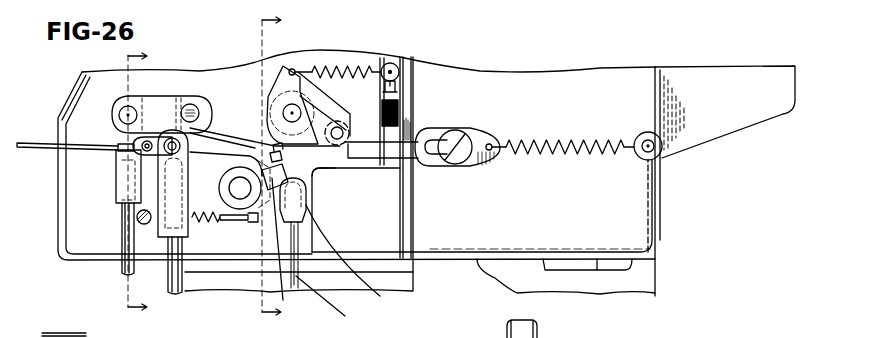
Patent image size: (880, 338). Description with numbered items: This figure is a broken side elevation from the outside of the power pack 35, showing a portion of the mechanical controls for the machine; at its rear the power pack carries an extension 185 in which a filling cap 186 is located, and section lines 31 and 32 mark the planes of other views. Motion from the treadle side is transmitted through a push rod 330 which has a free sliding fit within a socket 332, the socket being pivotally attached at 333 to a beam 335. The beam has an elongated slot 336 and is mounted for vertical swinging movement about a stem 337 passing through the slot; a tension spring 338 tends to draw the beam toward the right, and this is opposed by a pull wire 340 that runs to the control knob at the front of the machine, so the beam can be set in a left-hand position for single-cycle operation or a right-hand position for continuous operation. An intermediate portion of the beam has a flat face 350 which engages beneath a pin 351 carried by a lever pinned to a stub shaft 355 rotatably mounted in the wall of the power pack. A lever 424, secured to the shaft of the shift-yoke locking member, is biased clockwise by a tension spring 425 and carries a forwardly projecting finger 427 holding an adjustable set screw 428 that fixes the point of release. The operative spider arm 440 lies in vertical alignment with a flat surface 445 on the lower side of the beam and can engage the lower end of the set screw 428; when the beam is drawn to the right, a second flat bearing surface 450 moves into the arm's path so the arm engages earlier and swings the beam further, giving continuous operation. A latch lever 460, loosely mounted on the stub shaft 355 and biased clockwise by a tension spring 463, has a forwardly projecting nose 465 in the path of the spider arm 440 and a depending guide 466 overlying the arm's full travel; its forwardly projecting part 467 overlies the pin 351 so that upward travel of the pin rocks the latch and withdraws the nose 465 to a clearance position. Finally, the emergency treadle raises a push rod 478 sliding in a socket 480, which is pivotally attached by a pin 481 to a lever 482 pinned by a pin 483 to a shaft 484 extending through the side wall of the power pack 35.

The section line 31 is at (257, 172).
The section line 32 is at (123, 185).
The power pack 35 is at (665, 209).
The extension 185 is at (738, 128).
The filling cap 186 is at (375, 329).
The push rod 330 is at (177, 293).
The socket 332 is at (218, 226).
The pivotal attachment 333 is at (166, 150).
The beam 335 is at (405, 147).
The elongated slot 336 is at (437, 140).
The stem 337 is at (470, 130).
The tension spring 338 is at (587, 139).
The pull wire 340 is at (42, 153).
The flat face 350 is at (381, 167).
The pin 351 is at (342, 132).
The stub shaft 355 is at (287, 108).
The lever 424 is at (256, 222).
The tension spring 425 is at (155, 227).
The finger 427 is at (328, 180).
The set screw 428 is at (275, 162).
The spider arm 440 is at (308, 212).
The flat surface 445 is at (310, 192).
The second flat bearing surface 450 is at (283, 300).
The lever 460 is at (276, 90).
The tension spring 463 is at (364, 68).
The nose 465 is at (359, 259).
The depending guide 466 is at (335, 305).
The forwardly projecting part 467 is at (332, 112).
The push rod 478 is at (122, 265).
The socket 480 is at (118, 136).
The pin 481 is at (122, 108).
The lever 482 is at (168, 97).
The pin 483 is at (195, 108).
The shaft 484 is at (186, 125).